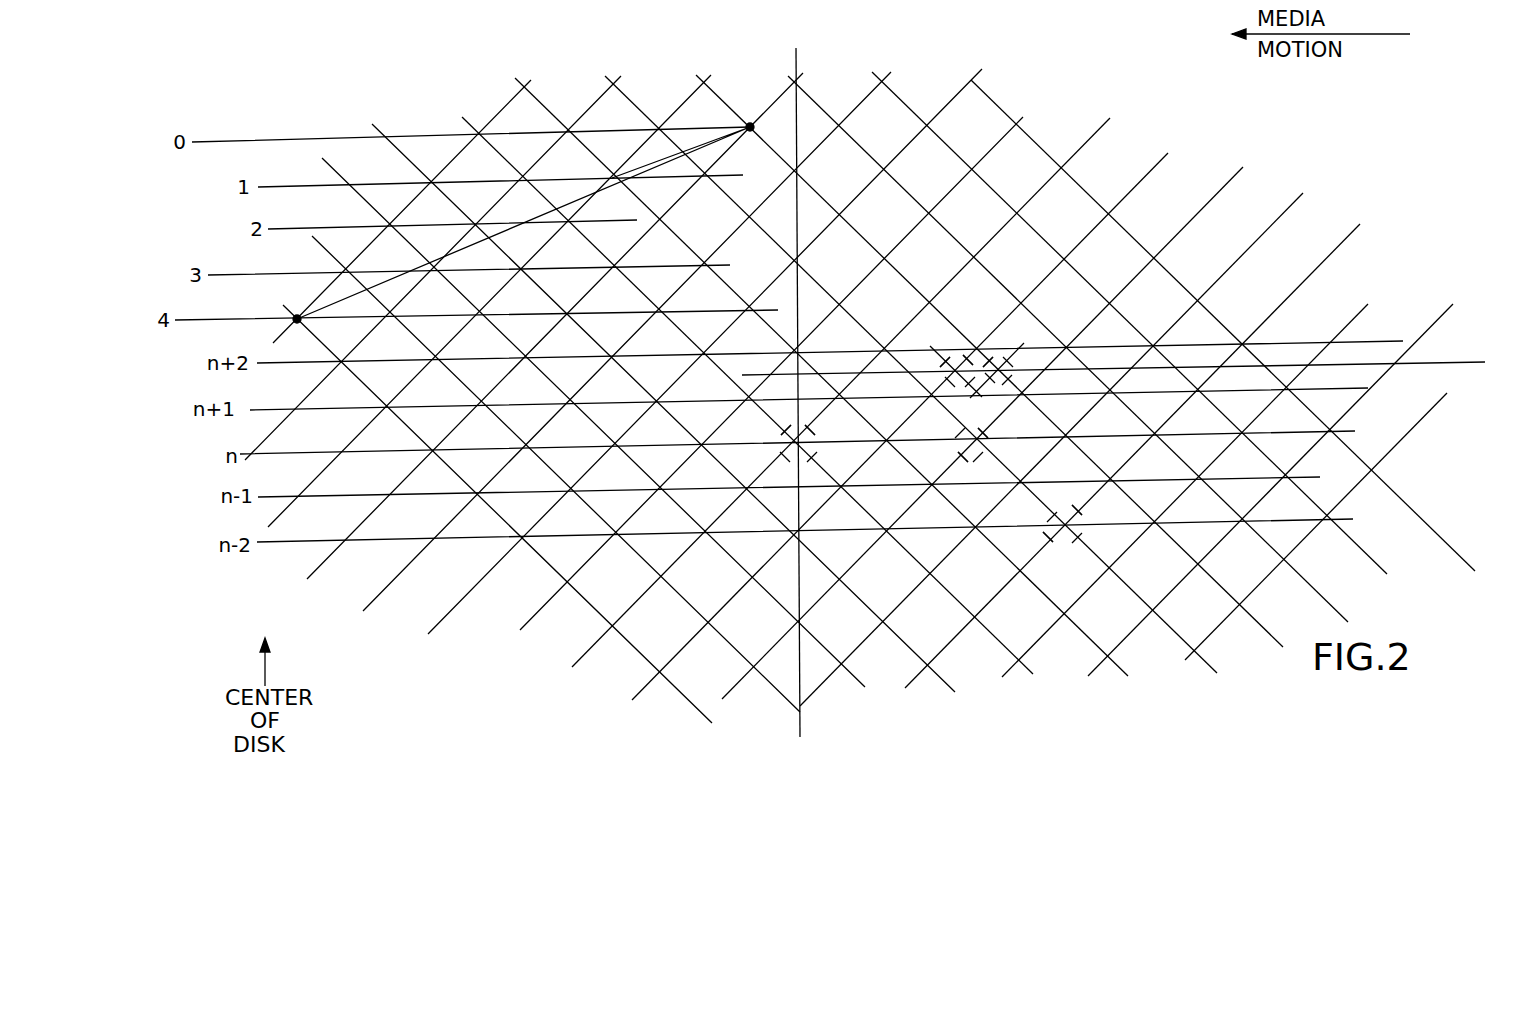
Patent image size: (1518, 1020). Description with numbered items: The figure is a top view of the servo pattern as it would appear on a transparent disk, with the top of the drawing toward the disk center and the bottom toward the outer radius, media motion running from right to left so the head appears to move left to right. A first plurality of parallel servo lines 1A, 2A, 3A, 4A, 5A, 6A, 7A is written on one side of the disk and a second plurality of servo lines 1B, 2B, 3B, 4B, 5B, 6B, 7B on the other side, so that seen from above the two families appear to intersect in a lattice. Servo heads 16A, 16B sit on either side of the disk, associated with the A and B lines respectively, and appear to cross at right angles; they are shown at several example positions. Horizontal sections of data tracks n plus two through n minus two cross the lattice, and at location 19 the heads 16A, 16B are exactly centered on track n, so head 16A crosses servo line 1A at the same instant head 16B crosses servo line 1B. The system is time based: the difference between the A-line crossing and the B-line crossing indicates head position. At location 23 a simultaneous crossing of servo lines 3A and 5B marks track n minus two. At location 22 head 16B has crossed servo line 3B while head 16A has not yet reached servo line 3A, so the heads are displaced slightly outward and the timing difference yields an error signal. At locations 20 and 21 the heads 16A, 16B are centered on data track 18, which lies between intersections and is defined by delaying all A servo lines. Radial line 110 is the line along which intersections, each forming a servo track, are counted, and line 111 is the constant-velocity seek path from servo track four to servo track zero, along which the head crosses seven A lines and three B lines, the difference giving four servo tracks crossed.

The radial line 110 is at (794, 56).
The servo head path line 111 is at (663, 165).
The data track 18 is at (1486, 362).
The track center location 19 is at (810, 441).
The head location on data track 18 20 is at (957, 355).
The head location on data track 18 21 is at (1005, 372).
The off-center head location 22 is at (977, 448).
The track n−2 location 23 is at (1077, 530).
The servo head 16A is at (808, 452).
The servo head 16B is at (781, 441).
The servo line 1A is at (477, 124).
The servo line 2A is at (530, 94).
The servo line 3A is at (628, 96).
The servo line 4A is at (718, 95).
The servo line 5A is at (815, 99).
The servo line 6A is at (893, 94).
The servo line 7A is at (990, 93).
The servo line 1B is at (572, 668).
The servo line 2B is at (643, 697).
The servo line 3B is at (728, 697).
The servo line 4B is at (822, 687).
The servo line 5B is at (922, 680).
The servo line 6B is at (1010, 681).
The servo line 7B is at (1093, 677).